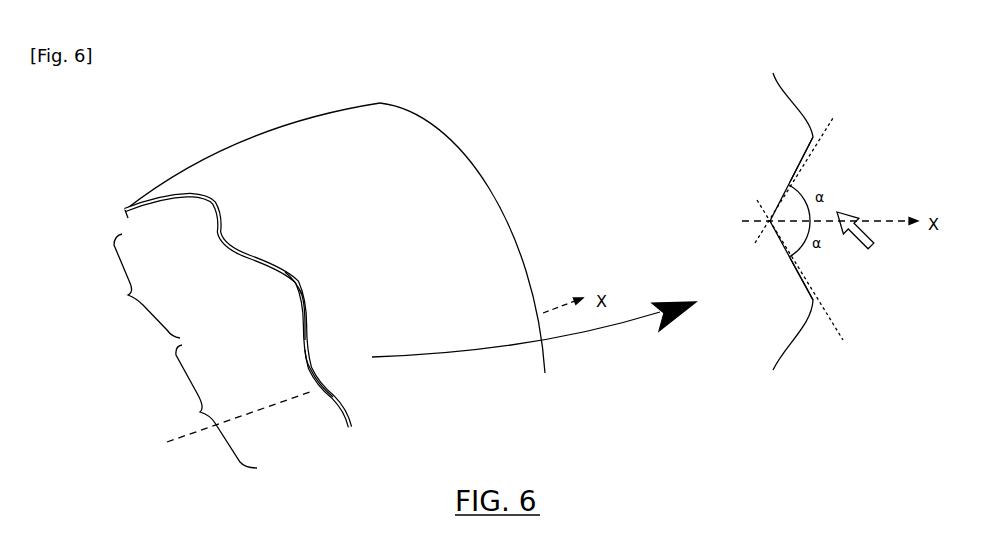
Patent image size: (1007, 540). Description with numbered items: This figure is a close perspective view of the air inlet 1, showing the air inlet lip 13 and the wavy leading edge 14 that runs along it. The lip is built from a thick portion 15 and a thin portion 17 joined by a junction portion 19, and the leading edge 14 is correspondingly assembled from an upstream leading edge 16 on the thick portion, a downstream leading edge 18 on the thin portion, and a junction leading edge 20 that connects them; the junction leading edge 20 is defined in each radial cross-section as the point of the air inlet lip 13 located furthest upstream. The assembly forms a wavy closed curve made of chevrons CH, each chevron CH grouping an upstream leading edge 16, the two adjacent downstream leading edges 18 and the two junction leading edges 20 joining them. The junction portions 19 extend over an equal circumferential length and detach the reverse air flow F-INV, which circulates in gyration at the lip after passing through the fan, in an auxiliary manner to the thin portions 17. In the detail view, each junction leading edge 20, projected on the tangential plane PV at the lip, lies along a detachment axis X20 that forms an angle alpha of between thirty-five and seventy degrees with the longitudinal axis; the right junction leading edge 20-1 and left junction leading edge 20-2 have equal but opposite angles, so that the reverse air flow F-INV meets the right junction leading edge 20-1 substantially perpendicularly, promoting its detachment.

The vehicle body panel 1 is at (503, 142).
The air inlet lip 13 is at (165, 145).
The leading edge 14 is at (123, 212).
The thick portion 15 is at (353, 369).
The upstream leading edge 16 is at (303, 377).
The thin portion 17 is at (332, 281).
The downstream leading edge 18 is at (293, 285).
The junction portion 19 is at (330, 317).
The junction leading edge 20 is at (302, 327).
The right junction leading edge 20-1 is at (802, 165).
The left junction leading edge 20-2 is at (802, 277).
The detachment axis X20 is at (786, 229).
The chevron CH is at (178, 351).
The tangential plane PV is at (795, 54).
The reverse air flow F-INV is at (865, 244).